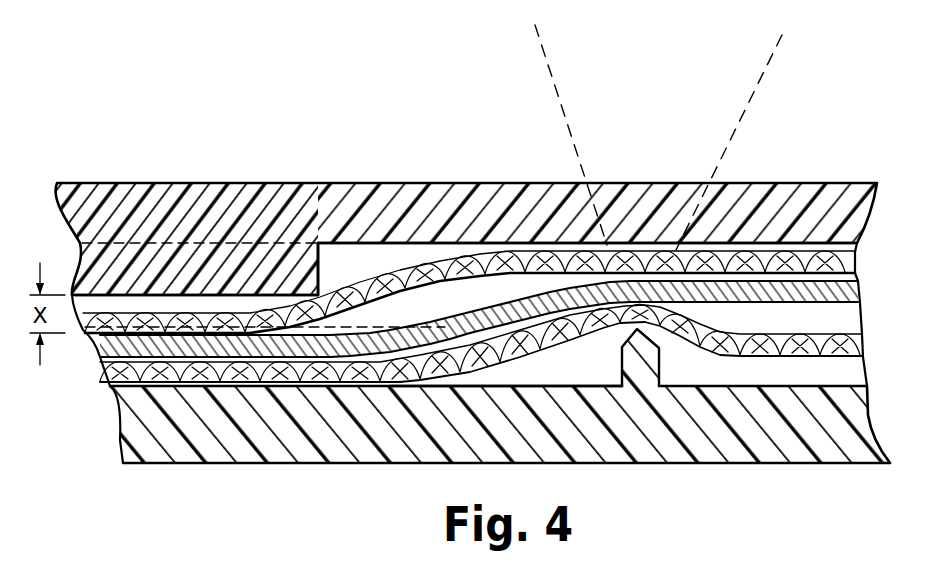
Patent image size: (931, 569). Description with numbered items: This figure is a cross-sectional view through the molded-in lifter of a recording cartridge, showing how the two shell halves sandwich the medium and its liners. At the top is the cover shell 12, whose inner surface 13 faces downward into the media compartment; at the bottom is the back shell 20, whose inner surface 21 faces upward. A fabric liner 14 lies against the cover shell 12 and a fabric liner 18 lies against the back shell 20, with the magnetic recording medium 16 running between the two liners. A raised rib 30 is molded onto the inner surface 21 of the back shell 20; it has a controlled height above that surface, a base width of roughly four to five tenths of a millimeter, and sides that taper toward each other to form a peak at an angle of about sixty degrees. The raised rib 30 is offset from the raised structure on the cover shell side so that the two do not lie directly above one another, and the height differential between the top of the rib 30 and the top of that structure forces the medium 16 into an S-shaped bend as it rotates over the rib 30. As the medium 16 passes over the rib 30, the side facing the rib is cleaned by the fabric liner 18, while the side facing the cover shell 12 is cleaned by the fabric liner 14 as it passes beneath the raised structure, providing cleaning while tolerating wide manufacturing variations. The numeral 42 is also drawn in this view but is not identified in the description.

The cover shell 12 is at (463, 183).
The inner surface of shell 12 13 is at (370, 262).
The fabric liner 14 is at (175, 322).
The magnetic recording medium 16 is at (860, 296).
The fabric liner 18 is at (836, 352).
The back shell 20 is at (397, 464).
The inner surface of shell 20 21 is at (545, 386).
The raised rib 30 is at (638, 358).
The spacer portion 42 is at (110, 282).